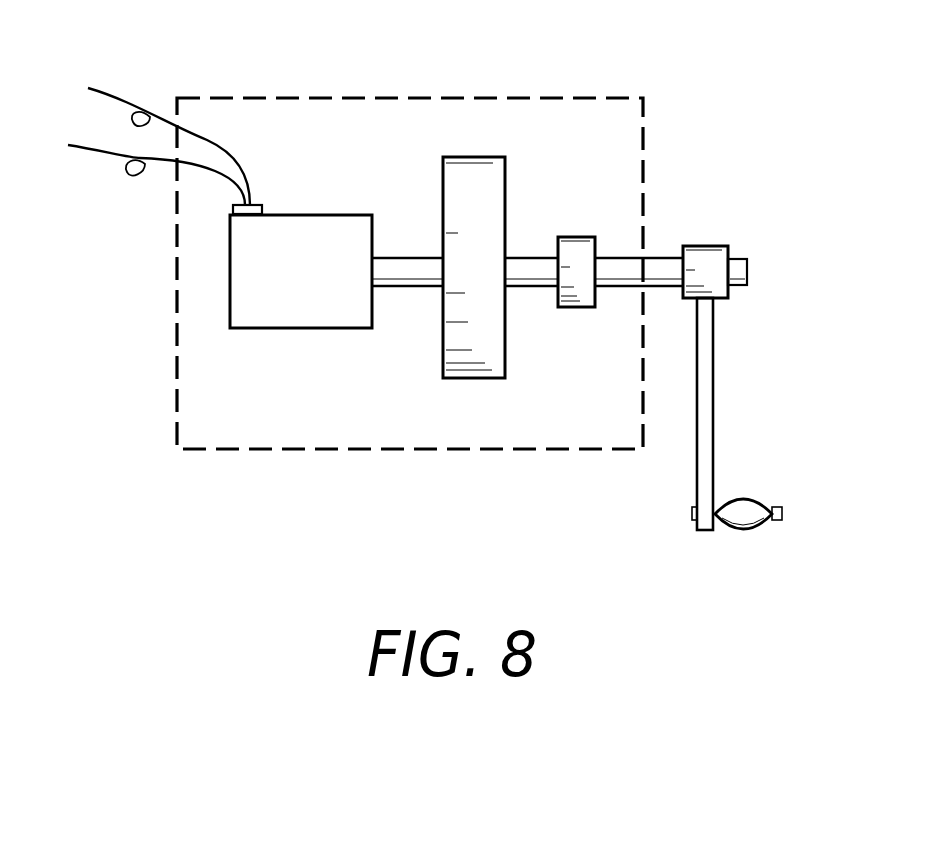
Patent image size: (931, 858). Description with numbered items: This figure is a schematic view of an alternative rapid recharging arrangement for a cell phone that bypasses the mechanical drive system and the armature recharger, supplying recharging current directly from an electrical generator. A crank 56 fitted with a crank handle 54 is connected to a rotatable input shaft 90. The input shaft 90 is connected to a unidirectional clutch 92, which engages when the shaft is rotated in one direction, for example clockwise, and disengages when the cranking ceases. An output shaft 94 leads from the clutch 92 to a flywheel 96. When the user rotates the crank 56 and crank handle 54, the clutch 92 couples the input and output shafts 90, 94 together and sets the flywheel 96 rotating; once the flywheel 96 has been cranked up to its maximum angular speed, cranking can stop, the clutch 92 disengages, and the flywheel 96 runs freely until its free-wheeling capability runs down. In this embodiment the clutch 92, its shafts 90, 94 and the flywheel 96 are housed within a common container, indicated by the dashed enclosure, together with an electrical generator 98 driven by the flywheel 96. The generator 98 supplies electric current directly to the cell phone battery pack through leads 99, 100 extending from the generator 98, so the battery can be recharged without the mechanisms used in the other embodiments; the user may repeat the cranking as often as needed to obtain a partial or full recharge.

The crank handle 54 is at (767, 500).
The crank 56 is at (715, 405).
The rotatable input shaft 90 is at (663, 257).
The unidirectional clutch 92 is at (572, 237).
The output shaft 94 is at (527, 257).
The flywheel 96 is at (480, 157).
The electrical generator 98 is at (320, 213).
The wire 99 is at (103, 90).
The wire 100 is at (90, 147).